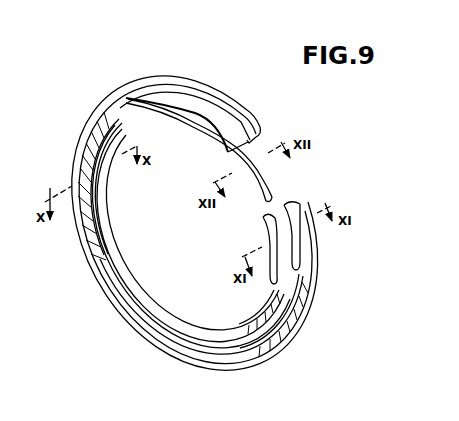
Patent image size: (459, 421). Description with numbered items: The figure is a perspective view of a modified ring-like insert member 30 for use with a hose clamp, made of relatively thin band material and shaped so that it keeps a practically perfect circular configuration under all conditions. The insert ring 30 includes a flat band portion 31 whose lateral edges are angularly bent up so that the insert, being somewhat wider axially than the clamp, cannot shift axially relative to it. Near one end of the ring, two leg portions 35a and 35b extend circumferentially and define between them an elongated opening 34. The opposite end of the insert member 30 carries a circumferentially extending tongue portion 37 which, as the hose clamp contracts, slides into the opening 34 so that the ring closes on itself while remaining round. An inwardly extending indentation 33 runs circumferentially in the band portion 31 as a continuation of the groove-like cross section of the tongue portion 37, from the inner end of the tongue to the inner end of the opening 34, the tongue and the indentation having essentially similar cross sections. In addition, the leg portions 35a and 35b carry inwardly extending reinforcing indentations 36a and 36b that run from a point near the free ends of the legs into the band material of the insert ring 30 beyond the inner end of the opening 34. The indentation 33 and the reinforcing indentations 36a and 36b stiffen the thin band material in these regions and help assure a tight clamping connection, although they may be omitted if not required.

The ring-like insert member 30 is at (231, 87).
The flat band portion 31 is at (171, 84).
The inwardly extending indentation 33 is at (194, 106).
The elongated opening 34 is at (296, 254).
The leg portion 35a is at (264, 213).
The leg portion 35b is at (298, 200).
The reinforcing indentation 36a is at (270, 230).
The reinforcing indentation 36b is at (302, 236).
The tongue portion 37 is at (270, 186).